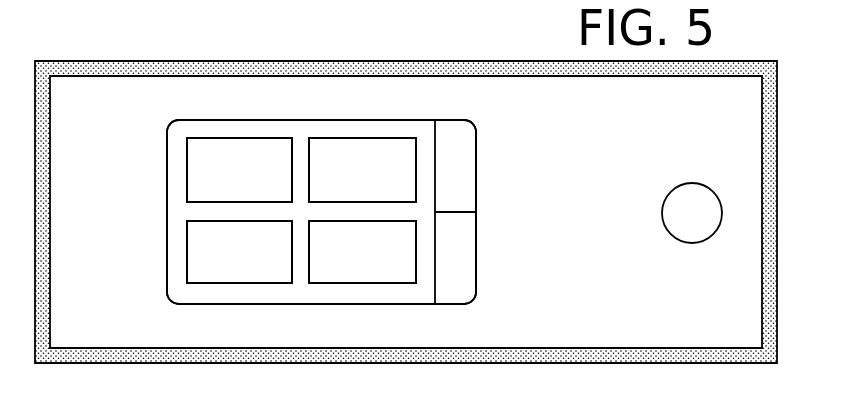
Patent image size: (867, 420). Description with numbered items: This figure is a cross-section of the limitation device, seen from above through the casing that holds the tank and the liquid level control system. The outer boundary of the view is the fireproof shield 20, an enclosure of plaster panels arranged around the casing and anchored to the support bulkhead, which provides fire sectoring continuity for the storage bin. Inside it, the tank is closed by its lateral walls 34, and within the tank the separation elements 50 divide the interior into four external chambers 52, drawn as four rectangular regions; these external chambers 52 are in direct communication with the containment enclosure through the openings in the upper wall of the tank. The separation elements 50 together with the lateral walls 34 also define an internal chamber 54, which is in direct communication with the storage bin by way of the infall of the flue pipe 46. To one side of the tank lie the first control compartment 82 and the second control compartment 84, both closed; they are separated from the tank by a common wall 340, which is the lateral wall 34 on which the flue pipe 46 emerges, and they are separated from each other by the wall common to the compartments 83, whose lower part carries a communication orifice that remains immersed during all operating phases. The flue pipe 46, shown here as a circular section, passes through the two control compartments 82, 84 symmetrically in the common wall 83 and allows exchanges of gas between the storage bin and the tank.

The fireproof shield 20 is at (725, 363).
The flue pipe 46 is at (693, 183).
The internal chamber 54 is at (197, 131).
The lateral walls 34 is at (167, 230).
The separation elements 50 is at (236, 137).
The external chambers 52 is at (272, 151).
The common wall 340 is at (437, 247).
The wall common to the compartments 83 is at (462, 211).
The second control compartment 84 is at (457, 157).
The first control compartment 82 is at (462, 288).